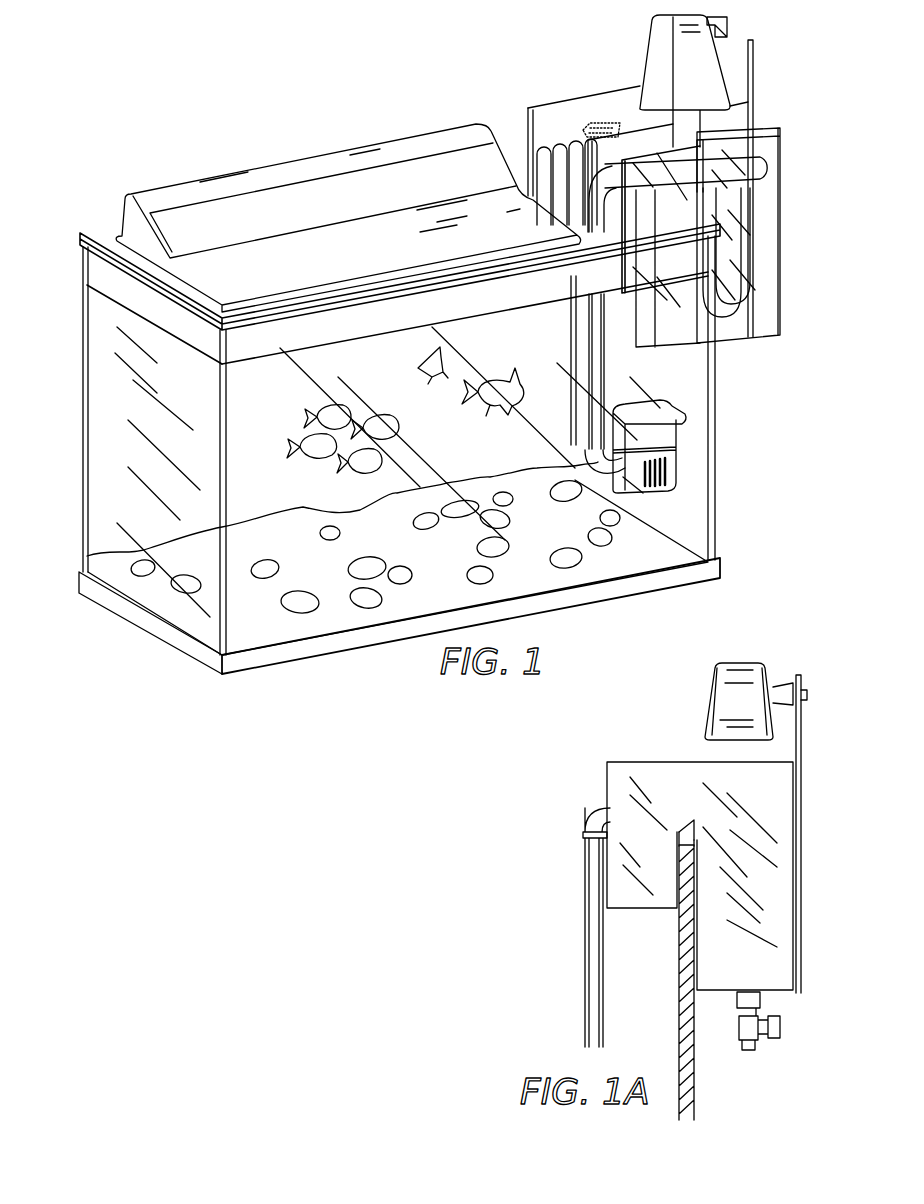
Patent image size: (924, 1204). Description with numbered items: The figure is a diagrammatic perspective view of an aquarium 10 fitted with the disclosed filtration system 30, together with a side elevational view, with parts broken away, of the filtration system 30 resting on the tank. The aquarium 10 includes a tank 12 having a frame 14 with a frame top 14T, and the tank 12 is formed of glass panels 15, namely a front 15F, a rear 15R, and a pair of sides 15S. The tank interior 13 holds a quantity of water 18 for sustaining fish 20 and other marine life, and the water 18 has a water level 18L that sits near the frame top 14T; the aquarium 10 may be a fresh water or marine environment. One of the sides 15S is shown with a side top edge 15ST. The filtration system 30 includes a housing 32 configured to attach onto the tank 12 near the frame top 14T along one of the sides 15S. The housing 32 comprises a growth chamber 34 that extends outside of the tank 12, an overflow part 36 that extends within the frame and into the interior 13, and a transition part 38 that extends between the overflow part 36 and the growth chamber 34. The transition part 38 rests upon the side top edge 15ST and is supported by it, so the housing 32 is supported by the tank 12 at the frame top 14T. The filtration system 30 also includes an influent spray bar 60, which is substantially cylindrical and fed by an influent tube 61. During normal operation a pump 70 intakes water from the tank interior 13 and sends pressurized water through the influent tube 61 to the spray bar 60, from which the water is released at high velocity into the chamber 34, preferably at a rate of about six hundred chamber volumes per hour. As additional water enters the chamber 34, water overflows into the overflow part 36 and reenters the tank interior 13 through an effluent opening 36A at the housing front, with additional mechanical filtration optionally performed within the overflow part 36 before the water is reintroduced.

In FIG. 1, the aquarium 10 is at (70, 482).
In FIG. 1, the tank 12 is at (80, 592).
In FIG. 1, the tank interior 13 is at (100, 273).
In FIG. 1, the frame 14 is at (276, 668).
In FIG. 1, the frame top 14T is at (101, 226).
In FIG. 1, the glass panels 15 is at (691, 528).
In FIG. 1, the front 15F is at (499, 492).
In FIG. 1, the rear 15R is at (82, 385).
In FIG. 1, the sides 15S is at (97, 431).
In FIG. 1A, the sides 15S is at (695, 1062).
In FIG. 1A, the side top edge 15ST is at (677, 830).
In FIG. 1, the water 18 is at (120, 306).
In FIG. 1, the water level 18L is at (127, 324).
In FIG. 1, the fish 20 is at (322, 460).
In FIG. 1, the filtration system 30 is at (797, 364).
In FIG. 1, the housing 32 is at (782, 253).
In FIG. 1, the growth chamber 34 is at (782, 312).
In FIG. 1A, the growth chamber 34 is at (800, 818).
In FIG. 1, the overflow part 36 is at (572, 92).
In FIG. 1A, the overflow part 36 is at (607, 778).
In FIG. 1, the effluent opening 36A is at (527, 112).
In FIG. 1, the transition part 38 is at (698, 149).
In FIG. 1A, the transition part 38 is at (688, 822).
In FIG. 1, the influent spray bar 60 is at (750, 180).
In FIG. 1, the influent tube 61 is at (602, 362).
In FIG. 1, the pump 70 is at (687, 470).